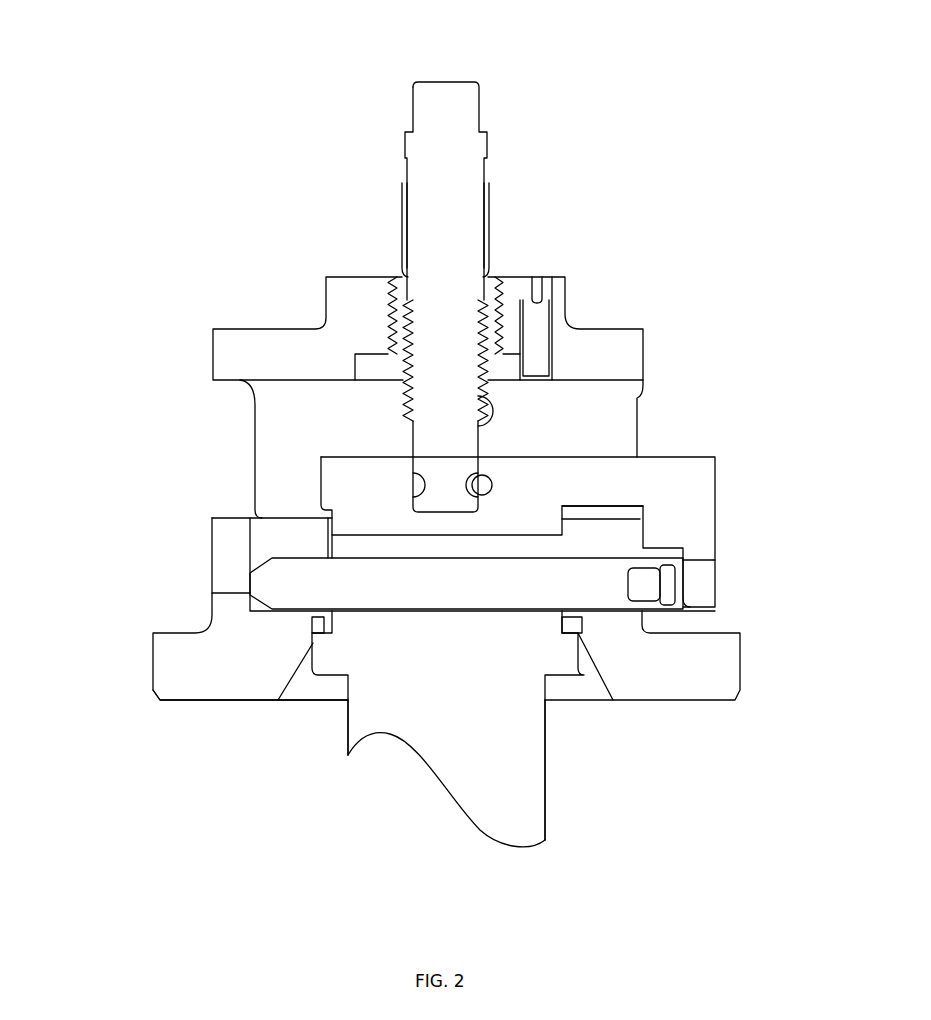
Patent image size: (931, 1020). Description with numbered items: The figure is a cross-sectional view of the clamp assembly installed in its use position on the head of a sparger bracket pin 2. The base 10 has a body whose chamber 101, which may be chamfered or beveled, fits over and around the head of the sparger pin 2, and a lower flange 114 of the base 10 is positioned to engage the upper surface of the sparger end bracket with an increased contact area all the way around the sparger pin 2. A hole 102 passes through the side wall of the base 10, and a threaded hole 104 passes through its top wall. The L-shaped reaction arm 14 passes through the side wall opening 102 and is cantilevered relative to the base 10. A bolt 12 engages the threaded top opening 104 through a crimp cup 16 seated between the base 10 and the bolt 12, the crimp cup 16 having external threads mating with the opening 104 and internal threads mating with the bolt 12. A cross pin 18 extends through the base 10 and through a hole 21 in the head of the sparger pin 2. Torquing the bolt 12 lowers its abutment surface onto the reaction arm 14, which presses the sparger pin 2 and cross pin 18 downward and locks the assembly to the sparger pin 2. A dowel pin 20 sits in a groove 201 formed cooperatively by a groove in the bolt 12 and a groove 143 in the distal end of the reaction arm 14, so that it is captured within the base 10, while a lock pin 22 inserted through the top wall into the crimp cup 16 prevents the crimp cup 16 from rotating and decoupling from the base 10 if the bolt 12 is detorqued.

The sparger bracket pin 2 is at (548, 757).
The base 10 is at (412, 679).
The bolt 12 is at (478, 78).
The reaction arm 14 is at (548, 516).
The crimp cup 16 is at (494, 183).
The cross pin 18 is at (263, 562).
The dowel pin 20 is at (490, 476).
The hole 21 is at (563, 616).
The lock pin 22 is at (545, 290).
The chamber 101 is at (313, 690).
The hole 102 is at (617, 430).
The hole 104 is at (398, 276).
The lower flange 114 is at (188, 690).
The groove 143 is at (492, 485).
The groove 201 is at (411, 487).